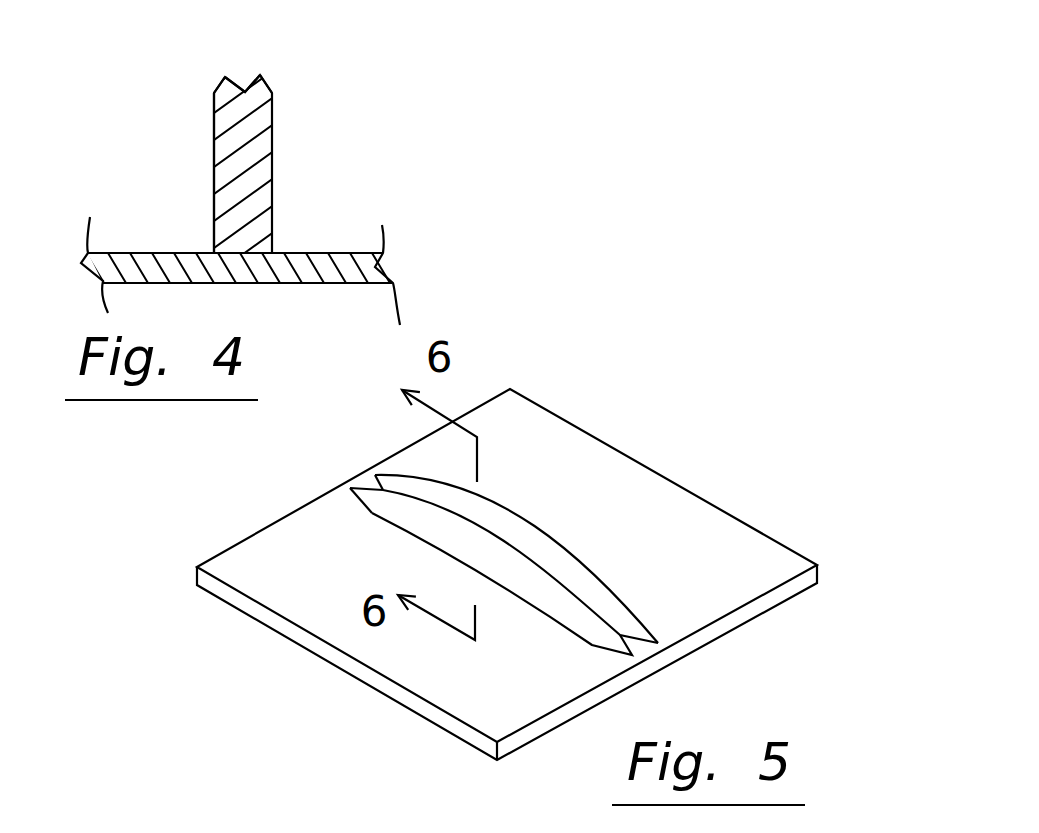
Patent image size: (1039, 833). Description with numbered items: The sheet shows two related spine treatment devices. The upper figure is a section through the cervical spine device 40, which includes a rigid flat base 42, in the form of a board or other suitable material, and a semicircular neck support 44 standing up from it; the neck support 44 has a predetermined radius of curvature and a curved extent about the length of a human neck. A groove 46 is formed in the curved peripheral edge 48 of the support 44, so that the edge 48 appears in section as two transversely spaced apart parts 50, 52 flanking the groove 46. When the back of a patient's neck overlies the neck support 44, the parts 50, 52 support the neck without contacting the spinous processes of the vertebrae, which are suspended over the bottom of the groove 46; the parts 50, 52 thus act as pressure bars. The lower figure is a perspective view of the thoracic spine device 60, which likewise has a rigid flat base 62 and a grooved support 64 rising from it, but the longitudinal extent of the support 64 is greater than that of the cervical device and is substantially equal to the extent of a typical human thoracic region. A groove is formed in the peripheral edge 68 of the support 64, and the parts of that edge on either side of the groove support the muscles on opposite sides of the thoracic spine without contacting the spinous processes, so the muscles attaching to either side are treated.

In FIG. 4, the cervical spine device 40 is at (232, 168).
In FIG. 4, the rigid flat base 42 is at (327, 253).
In FIG. 4, the semicircular neck support 44 is at (272, 143).
In FIG. 4, the groove 46 is at (244, 90).
In FIG. 4, the curved peripheral edge 48 is at (215, 173).
In FIG. 4, the part of edge flanking groove 50 is at (229, 81).
In FIG. 4, the part of edge flanking groove 52 is at (261, 77).
In FIG. 5, the thoracic spine device 60 is at (507, 553).
In FIG. 5, the rigid flat base 62 is at (678, 508).
In FIG. 5, the grooved support 64 is at (438, 547).
In FIG. 5, the peripheral edge 68 is at (507, 508).